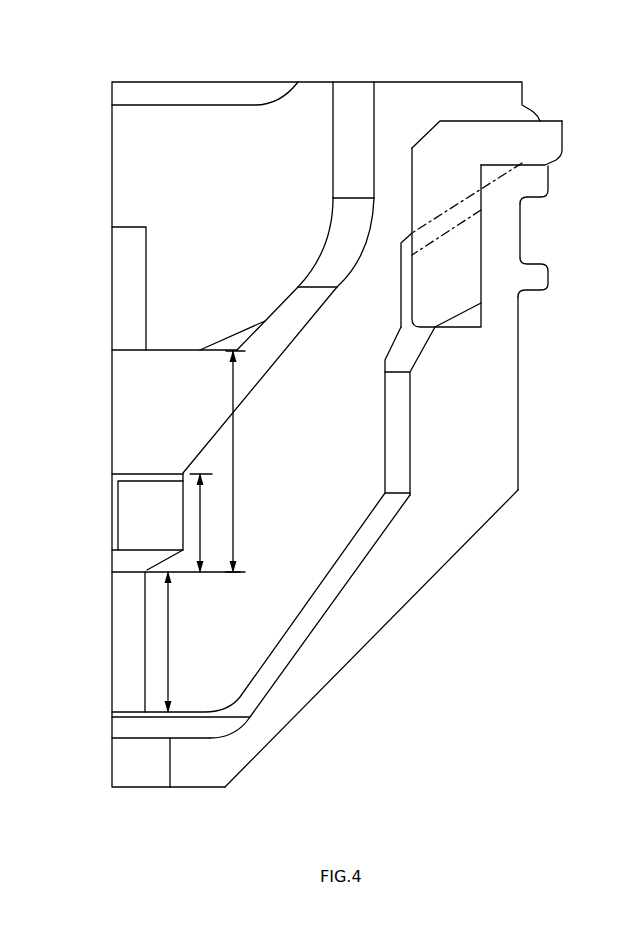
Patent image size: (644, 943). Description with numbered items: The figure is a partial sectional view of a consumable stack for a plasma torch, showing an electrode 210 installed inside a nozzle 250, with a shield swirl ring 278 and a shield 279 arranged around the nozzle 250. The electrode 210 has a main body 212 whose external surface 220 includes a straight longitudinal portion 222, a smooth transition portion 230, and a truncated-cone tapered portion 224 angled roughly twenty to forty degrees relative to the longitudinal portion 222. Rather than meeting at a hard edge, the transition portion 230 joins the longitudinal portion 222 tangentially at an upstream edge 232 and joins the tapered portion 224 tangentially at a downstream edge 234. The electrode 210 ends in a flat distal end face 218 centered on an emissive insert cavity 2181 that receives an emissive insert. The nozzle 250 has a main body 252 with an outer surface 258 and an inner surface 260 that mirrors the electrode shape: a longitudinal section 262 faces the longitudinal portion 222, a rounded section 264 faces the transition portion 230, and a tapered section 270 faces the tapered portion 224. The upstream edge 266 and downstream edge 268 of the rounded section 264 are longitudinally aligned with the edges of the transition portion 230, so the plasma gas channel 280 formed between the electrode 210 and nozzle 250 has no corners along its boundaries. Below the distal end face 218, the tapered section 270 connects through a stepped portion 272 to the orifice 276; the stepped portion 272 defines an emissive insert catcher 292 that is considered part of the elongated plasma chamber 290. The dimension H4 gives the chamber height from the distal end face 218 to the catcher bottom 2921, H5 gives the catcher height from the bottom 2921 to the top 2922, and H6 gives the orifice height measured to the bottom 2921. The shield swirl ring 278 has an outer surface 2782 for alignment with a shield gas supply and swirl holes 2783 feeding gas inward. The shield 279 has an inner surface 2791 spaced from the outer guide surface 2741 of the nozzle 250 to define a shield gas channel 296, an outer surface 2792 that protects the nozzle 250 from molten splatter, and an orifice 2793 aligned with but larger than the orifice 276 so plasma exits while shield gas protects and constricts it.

The electrode 210 is at (137, 138).
The main body 212 is at (178, 176).
The emissive insert cavity 2181 is at (110, 292).
The distal end face 218 is at (147, 356).
The external surface 220 is at (342, 92).
The longitudinal portion 222 is at (332, 129).
The tapered portion 224 is at (262, 318).
The transition portion 230 is at (323, 230).
The upstream edge 232 is at (332, 192).
The downstream edge 234 is at (287, 282).
The nozzle 250 is at (490, 93).
The main body 252 is at (348, 422).
The outer surface 258 is at (261, 606).
The inner surface 260 is at (387, 117).
The longitudinal section 262 is at (373, 168).
The rounded section 264 is at (346, 262).
The upstream edge 266 is at (376, 200).
The downstream edge 268 is at (354, 287).
The tapered section 270 is at (312, 343).
The stepped portion 272 is at (186, 545).
The orifice 276 is at (124, 633).
The shield swirl ring 278 is at (531, 133).
The shield 279 is at (519, 407).
The plasma gas channel 280 is at (372, 92).
The elongated plasma chamber 290 is at (178, 422).
The emissive insert catcher 292 is at (156, 523).
The shield gas channel 296 is at (352, 577).
The outer guide surface 2741 is at (303, 632).
The outer surface 2782 is at (484, 178).
The swirl holes 2783 is at (446, 236).
The inner surface 2791 is at (398, 517).
The outer surface 2792 is at (519, 505).
The orifice 2793 is at (145, 770).
The bottom 2921 is at (118, 566).
The top 2922 is at (116, 478).
The height of the elongated plasma chamber H4 is at (243, 461).
The height of the emissive insert catcher H5 is at (207, 523).
The height of the orifice H6 is at (181, 642).